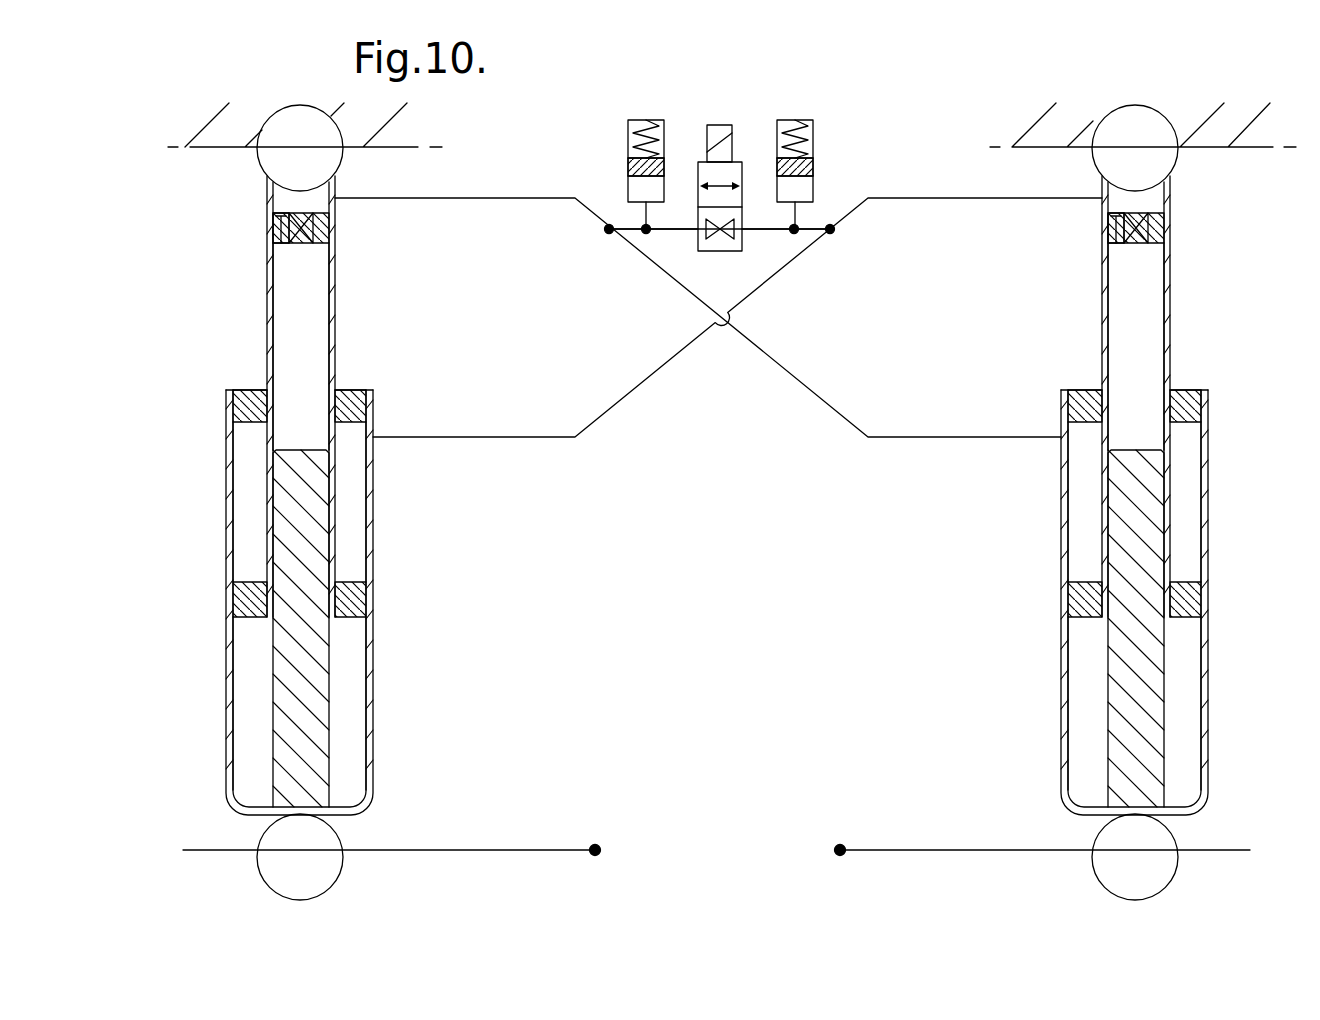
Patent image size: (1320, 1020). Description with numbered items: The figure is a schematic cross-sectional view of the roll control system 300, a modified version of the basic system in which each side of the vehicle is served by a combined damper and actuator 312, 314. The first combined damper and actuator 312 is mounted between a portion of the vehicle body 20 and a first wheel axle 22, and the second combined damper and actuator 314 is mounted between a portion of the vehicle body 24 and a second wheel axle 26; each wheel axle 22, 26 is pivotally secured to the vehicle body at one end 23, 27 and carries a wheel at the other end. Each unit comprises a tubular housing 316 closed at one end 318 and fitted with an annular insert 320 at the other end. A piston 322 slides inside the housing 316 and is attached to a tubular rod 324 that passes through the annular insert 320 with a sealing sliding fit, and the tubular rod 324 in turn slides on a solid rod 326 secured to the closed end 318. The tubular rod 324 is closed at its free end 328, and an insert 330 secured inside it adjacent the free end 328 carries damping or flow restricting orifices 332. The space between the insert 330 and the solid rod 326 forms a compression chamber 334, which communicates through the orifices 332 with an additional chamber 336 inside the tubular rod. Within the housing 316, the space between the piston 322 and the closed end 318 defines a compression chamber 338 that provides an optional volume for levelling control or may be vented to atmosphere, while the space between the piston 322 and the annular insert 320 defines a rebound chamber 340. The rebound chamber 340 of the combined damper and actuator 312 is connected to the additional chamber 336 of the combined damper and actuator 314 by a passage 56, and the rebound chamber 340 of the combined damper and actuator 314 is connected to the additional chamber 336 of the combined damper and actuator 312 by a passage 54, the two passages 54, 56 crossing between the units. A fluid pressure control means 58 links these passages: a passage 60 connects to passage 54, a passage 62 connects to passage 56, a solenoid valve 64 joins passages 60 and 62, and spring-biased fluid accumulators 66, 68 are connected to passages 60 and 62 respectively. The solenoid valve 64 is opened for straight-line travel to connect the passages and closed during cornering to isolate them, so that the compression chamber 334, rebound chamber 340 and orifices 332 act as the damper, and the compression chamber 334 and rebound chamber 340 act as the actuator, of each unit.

The portion of the vehicle body 20 is at (198, 149).
The portion of the vehicle body 24 is at (1263, 149).
The first wheel axle 22 is at (516, 853).
The pivot end of first wheel axle 23 is at (595, 856).
The second wheel axle 26 is at (978, 853).
The pivot end of second wheel axle 27 is at (840, 856).
The passage 54 is at (812, 397).
The passage 56 is at (628, 397).
The fluid pressure control means 58 is at (728, 166).
The passage 60 is at (662, 232).
The passage 62 is at (773, 232).
The solenoid valve 64 is at (720, 125).
The fluid accumulator 66 is at (641, 120).
The fluid accumulator 68 is at (808, 120).
The roll control system 300 is at (709, 575).
The combined damper and actuator 312 is at (204, 432).
The combined damper and actuator 314 is at (1231, 428).
The tubular housing 316 is at (375, 682).
The closed end 318 is at (342, 815).
The annular insert 320 is at (355, 388).
The piston 322 is at (357, 603).
The tubular rod 324 is at (337, 325).
The solid rod 326 is at (288, 692).
The free end 328 is at (337, 175).
The insert 330 is at (276, 233).
The orifices 332 is at (276, 222).
The compression chamber 334 is at (311, 267).
The additional chamber 336 is at (333, 191).
The compression chamber 338 is at (355, 767).
The rebound chamber 340 is at (353, 510).